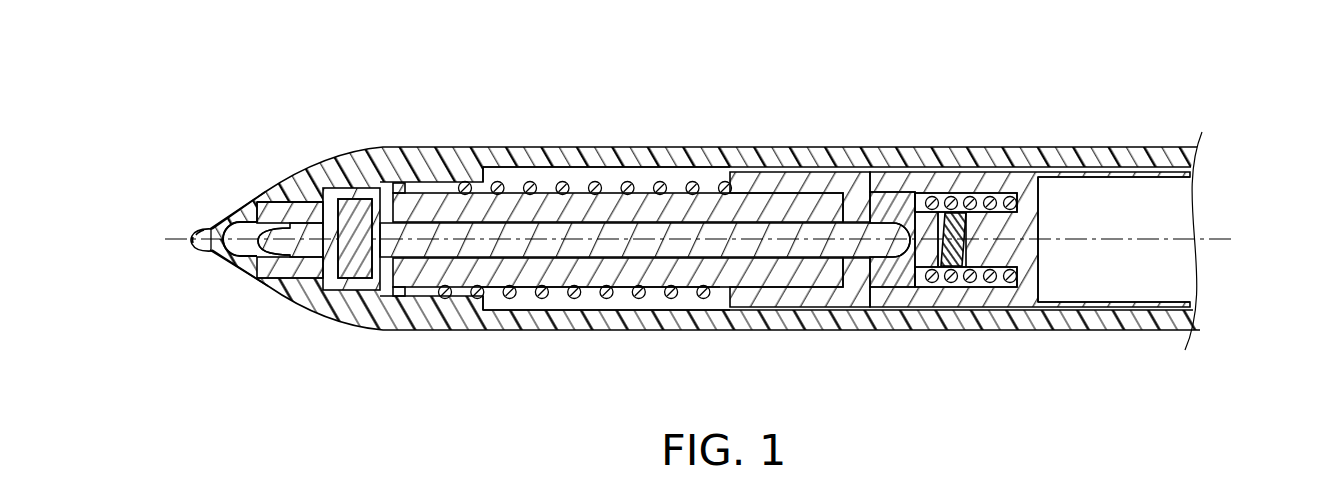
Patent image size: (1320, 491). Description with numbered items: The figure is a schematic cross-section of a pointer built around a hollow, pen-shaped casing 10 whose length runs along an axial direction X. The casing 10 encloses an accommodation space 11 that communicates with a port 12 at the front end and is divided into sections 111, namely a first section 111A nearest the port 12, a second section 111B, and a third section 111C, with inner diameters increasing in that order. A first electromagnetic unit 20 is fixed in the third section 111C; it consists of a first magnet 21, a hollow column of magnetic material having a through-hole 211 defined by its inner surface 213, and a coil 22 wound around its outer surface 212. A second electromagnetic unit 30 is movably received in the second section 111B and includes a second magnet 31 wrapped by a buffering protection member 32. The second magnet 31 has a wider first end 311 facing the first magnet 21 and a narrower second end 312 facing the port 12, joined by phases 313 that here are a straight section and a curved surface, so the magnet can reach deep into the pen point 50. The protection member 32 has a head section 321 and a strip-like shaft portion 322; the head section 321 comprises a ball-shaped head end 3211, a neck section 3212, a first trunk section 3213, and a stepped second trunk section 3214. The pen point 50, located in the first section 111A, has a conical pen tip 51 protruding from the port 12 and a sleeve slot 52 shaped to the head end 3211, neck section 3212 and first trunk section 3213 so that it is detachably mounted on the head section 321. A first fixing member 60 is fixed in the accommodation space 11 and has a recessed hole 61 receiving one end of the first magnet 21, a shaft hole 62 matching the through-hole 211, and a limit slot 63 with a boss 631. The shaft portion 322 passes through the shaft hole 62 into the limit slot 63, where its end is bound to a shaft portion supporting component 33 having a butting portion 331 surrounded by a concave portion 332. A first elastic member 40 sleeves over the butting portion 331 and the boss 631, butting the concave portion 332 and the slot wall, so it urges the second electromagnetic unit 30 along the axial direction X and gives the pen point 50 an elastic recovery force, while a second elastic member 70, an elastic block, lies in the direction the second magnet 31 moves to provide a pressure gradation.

The casing 10 is at (690, 200).
The accommodation space 11 is at (551, 180).
The sections 111 is at (454, 180).
The first section 111A is at (283, 195).
The second section 111B is at (330, 186).
The third section 111C is at (487, 168).
The port 12 is at (252, 212).
The first electromagnetic unit 20 is at (618, 219).
The first magnet 21 is at (618, 241).
The through-hole 211 is at (596, 272).
The outer surface 212 is at (517, 282).
The inner surface 213 is at (683, 270).
The coil 22 is at (748, 87).
The second electromagnetic unit 30 is at (232, 220).
The second magnet 31 is at (352, 212).
The first end 311 is at (425, 214).
The second end 312 is at (252, 204).
The phases 313 is at (282, 203).
The protection member 32 is at (538, 268).
The head section 321 is at (273, 297).
The head end 3211 is at (250, 261).
The neck section 3212 is at (262, 262).
The first trunk section 3213 is at (292, 276).
The second trunk section 3214 is at (344, 275).
The shaft portion 322 is at (413, 262).
The shaft portion supporting component 33 is at (966, 311).
The butting portion 331 is at (950, 284).
The concave portion 332 is at (928, 272).
The first elastic member 40 is at (1008, 186).
The pen point 50 is at (151, 246).
The pen tip 51 is at (192, 241).
The sleeve slot 52 is at (205, 231).
The first fixing member 60 is at (960, 241).
The recessed hole 61 is at (791, 180).
The shaft hole 62 is at (872, 215).
The limit slot 63 is at (1030, 241).
The boss 631 is at (1010, 250).
The second elastic member 70 is at (999, 302).
The axial direction X is at (1228, 238).